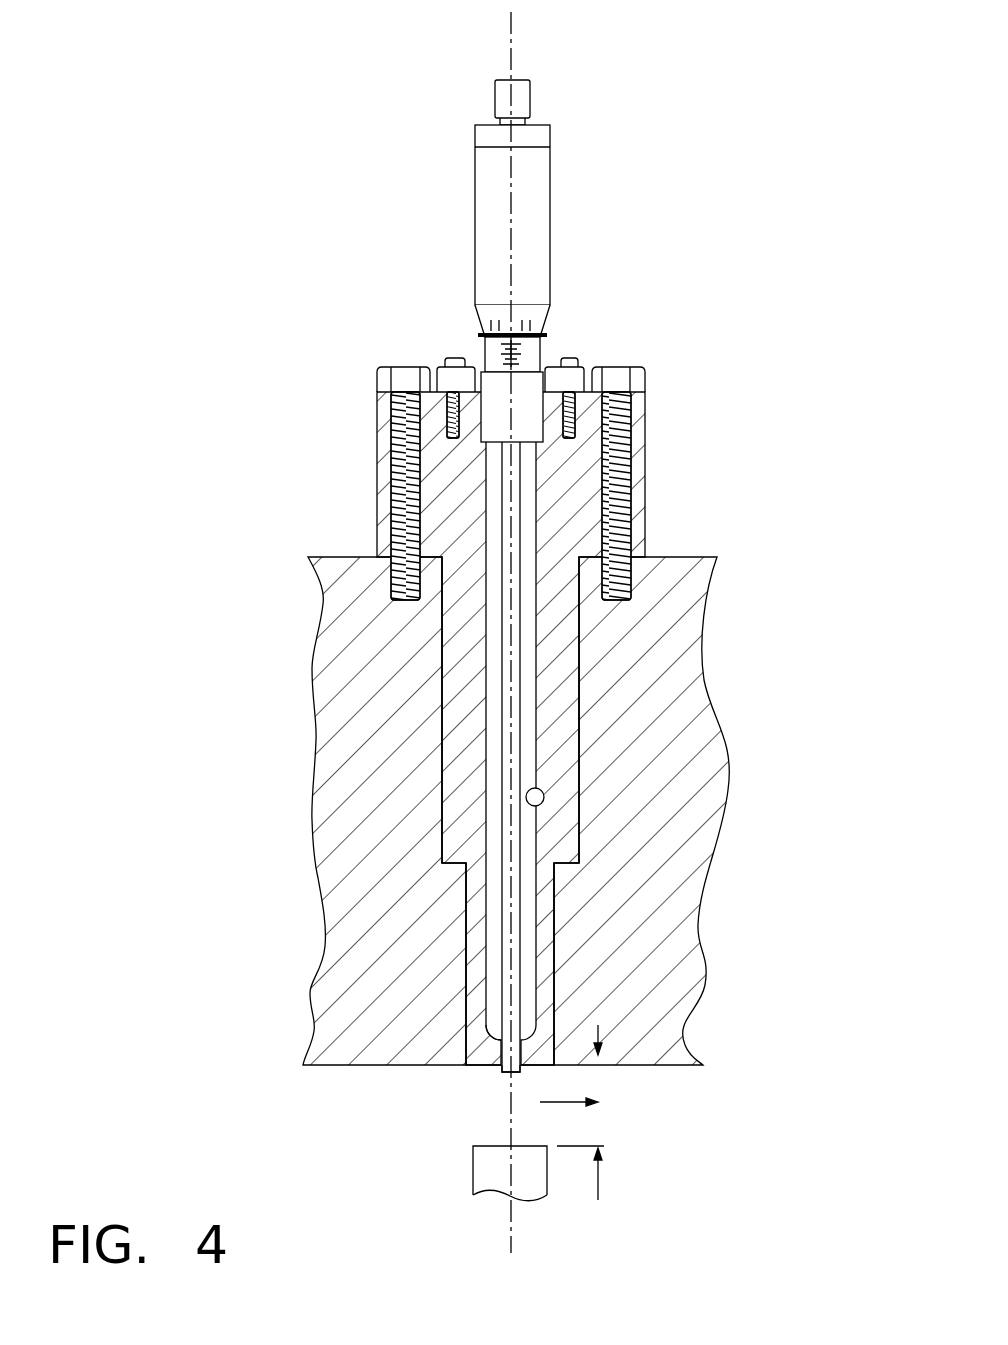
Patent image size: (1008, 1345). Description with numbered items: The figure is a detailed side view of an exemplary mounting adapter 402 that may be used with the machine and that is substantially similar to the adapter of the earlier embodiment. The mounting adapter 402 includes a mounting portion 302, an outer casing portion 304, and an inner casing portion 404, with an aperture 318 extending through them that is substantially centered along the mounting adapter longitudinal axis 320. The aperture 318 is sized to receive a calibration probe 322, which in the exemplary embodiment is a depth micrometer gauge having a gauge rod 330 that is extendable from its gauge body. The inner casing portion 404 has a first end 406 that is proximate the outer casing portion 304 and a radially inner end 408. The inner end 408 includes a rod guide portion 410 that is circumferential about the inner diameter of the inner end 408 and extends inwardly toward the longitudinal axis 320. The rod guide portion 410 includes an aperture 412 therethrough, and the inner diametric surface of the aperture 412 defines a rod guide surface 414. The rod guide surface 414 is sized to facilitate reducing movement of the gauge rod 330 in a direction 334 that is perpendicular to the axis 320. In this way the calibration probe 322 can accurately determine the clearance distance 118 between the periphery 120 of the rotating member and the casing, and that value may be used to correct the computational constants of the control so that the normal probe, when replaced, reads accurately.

The clearance distance 118 is at (598, 1188).
The periphery 120 is at (482, 1147).
The mounting portion 302 is at (276, 560).
The outer casing portion 304 is at (276, 872).
The aperture 318 is at (541, 805).
The mounting adapter longitudinal axis 320 is at (511, 48).
The calibration probe 322 is at (537, 197).
The gauge rod 330 is at (520, 712).
The direction 334 is at (561, 1103).
The mounting adapter 402 is at (752, 392).
The inner casing portion 404 is at (276, 1062).
The first end 406 is at (543, 875).
The radially inner end 408 is at (547, 1062).
The rod guide portion 410 is at (537, 1043).
The aperture 412 is at (503, 1075).
The rod guide surface 414 is at (501, 1037).